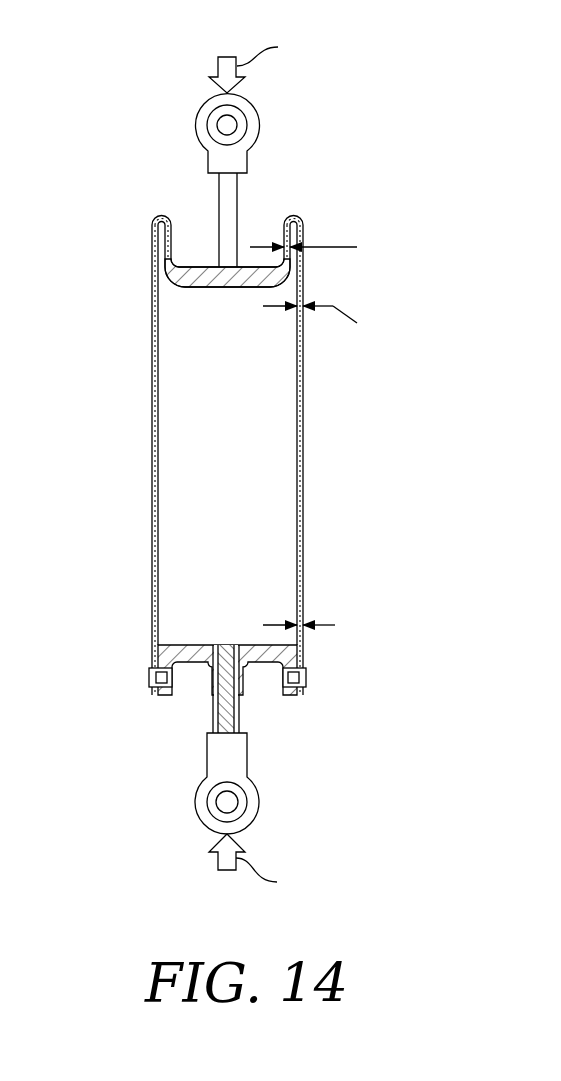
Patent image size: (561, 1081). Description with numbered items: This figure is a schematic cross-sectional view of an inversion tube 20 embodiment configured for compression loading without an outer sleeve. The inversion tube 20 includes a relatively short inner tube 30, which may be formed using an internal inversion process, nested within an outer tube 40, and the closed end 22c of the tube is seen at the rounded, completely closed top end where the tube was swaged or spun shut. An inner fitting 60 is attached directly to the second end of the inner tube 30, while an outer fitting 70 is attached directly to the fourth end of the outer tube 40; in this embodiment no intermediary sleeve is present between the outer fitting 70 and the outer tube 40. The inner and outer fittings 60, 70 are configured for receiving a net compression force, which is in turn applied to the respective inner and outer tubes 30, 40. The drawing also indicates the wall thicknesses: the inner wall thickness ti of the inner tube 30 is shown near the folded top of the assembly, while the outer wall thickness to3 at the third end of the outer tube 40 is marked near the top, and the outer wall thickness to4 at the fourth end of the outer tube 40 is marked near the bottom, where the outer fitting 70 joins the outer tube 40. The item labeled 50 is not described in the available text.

The inversion tube 20 is at (162, 120).
The closed end 22c is at (207, 322).
The inner tube 30 is at (165, 247).
The outer tube 40 is at (152, 500).
The folded lip 50 is at (162, 214).
The inner fitting 60 is at (275, 140).
The outer fitting 70 is at (177, 733).
The inner wall thickness ti is at (311, 249).
The outer wall thickness at the third end to3 is at (325, 327).
The outer wall thickness at the fourth end to4 is at (314, 632).